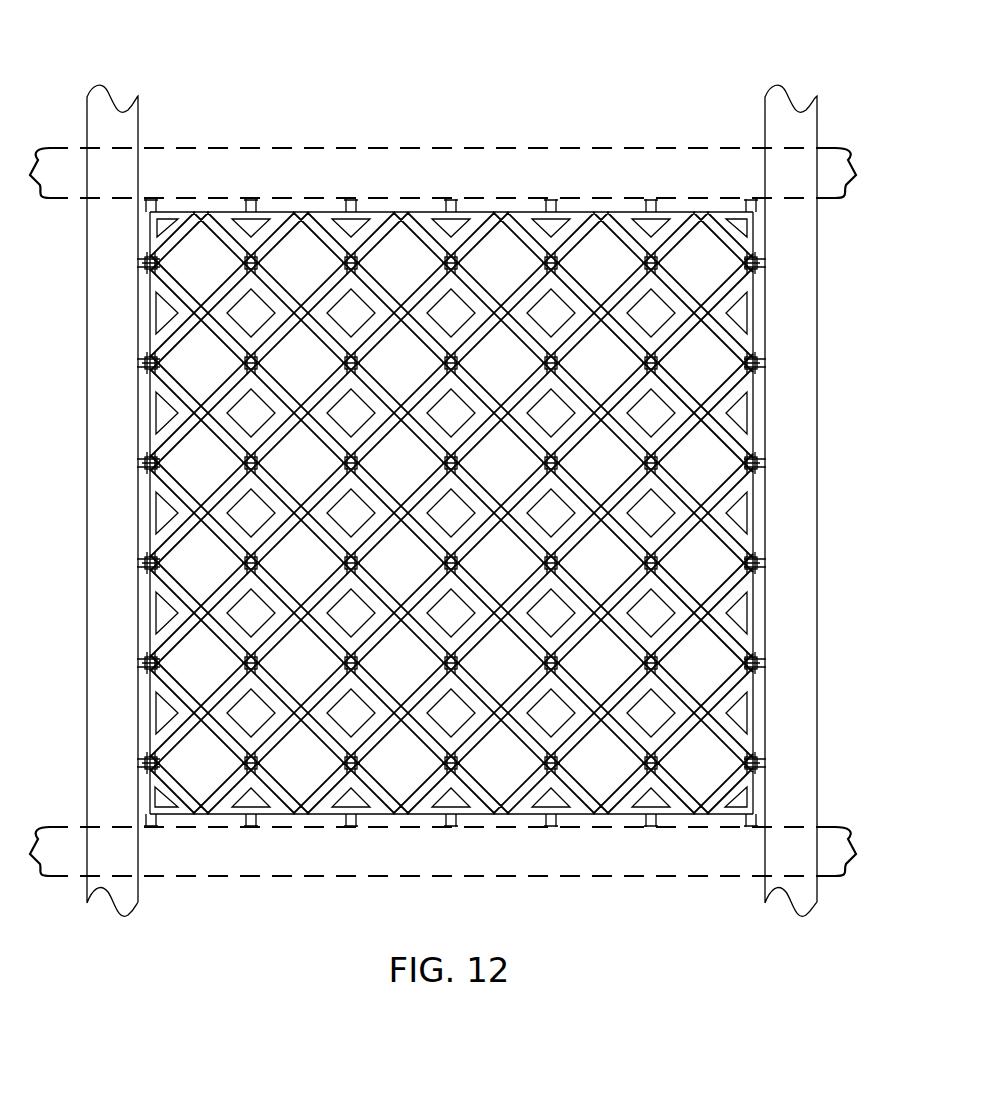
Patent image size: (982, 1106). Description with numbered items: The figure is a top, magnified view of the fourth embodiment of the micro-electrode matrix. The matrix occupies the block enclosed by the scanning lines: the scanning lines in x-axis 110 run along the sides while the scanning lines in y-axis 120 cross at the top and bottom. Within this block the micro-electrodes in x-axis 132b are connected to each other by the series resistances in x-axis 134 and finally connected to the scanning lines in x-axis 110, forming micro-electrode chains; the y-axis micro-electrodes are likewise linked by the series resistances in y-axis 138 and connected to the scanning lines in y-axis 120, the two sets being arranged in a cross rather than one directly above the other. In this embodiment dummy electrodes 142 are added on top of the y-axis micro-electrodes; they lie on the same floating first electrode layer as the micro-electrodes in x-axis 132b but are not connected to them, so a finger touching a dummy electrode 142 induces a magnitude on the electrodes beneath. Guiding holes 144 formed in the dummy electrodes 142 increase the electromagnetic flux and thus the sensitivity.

The scanning lines in x-axis 110 is at (101, 90).
The scanning lines in y-axis 120 is at (614, 146).
The micro-electrodes in x-axis 132b is at (198, 214).
The series resistances in x-axis 134 is at (245, 252).
The series resistances in y-axis 138 is at (665, 267).
The dummy electrodes 142 is at (567, 287).
The guiding holes 144 is at (748, 487).